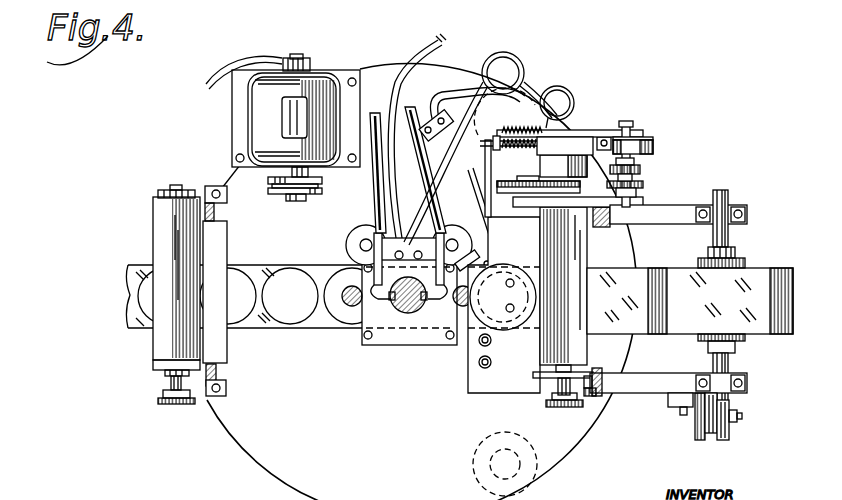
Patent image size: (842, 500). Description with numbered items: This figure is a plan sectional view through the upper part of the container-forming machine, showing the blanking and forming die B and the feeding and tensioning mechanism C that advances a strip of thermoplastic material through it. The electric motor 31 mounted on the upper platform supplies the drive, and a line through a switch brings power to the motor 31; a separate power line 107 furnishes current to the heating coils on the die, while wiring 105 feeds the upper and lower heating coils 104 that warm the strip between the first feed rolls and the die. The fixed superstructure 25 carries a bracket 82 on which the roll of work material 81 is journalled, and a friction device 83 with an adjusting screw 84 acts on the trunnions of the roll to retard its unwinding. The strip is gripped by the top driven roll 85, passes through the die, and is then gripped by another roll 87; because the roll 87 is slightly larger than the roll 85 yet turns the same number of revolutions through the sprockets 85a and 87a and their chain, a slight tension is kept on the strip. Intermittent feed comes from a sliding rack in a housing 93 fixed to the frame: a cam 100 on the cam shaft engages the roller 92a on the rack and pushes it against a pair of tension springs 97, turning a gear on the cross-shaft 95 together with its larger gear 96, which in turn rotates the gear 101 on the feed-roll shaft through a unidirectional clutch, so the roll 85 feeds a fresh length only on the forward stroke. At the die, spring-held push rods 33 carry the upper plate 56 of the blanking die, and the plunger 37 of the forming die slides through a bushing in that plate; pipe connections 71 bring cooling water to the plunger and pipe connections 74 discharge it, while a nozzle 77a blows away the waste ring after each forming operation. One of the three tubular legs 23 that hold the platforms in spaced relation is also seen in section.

The electric motor 31 is at (318, 80).
The power line 107 is at (434, 40).
The wiring 105 is at (522, 62).
The tension springs 97 is at (547, 128).
The housing 93 is at (572, 138).
The roller 92a is at (605, 134).
The cam 100 is at (655, 147).
The feeding and tensioning mechanism C is at (640, 168).
The blanking and forming die B is at (643, 186).
The gear 101 is at (609, 186).
The cross-shaft 95 is at (530, 168).
The larger gear 96 is at (540, 195).
The superstructure 25 is at (222, 380).
The roll of work material 81 is at (752, 280).
The pipe connections 74 is at (374, 183).
The pipe connections 71 is at (446, 188).
The nozzle 77a is at (478, 232).
The heating coils 104 is at (497, 253).
The plunger 37 is at (409, 279).
The push rods 33 is at (352, 300).
The plate 56 is at (420, 336).
The roll 87 is at (166, 343).
The sprocket 87a is at (175, 406).
The top driven roll 85 is at (586, 346).
The sprocket 85a is at (548, 402).
The tubular legs 23 is at (530, 455).
The bracket 82 is at (662, 386).
The friction device 83 is at (730, 406).
The adjusting screw 84 is at (741, 424).